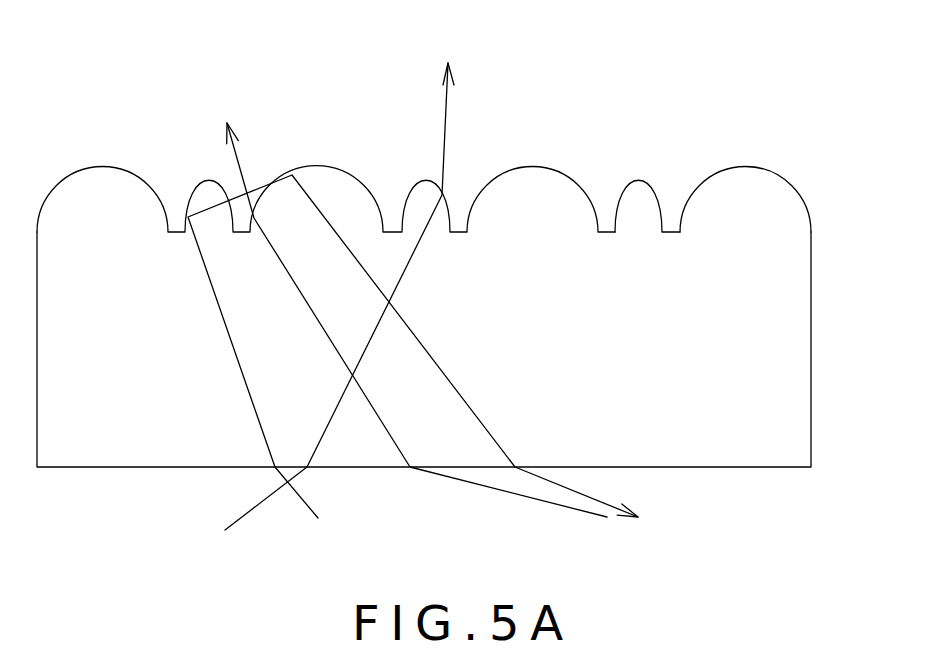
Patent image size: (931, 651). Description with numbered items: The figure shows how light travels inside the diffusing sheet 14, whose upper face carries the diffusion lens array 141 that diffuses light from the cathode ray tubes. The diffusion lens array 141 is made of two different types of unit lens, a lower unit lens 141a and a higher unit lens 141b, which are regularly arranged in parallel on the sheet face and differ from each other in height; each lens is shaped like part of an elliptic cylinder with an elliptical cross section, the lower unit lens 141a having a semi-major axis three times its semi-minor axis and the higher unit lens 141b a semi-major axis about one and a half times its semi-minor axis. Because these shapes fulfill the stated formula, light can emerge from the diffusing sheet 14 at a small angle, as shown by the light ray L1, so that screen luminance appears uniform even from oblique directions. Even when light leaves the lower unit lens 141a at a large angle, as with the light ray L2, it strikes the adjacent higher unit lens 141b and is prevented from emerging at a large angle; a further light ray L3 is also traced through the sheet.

The diffusing sheet 14 is at (545, 118).
The diffusion lens array 141 is at (445, 127).
The lower unit lens 141a is at (643, 185).
The higher unit lens 141b is at (756, 161).
The light ray L1 is at (513, 498).
The light ray L2 is at (227, 332).
The light ray L3 is at (257, 505).